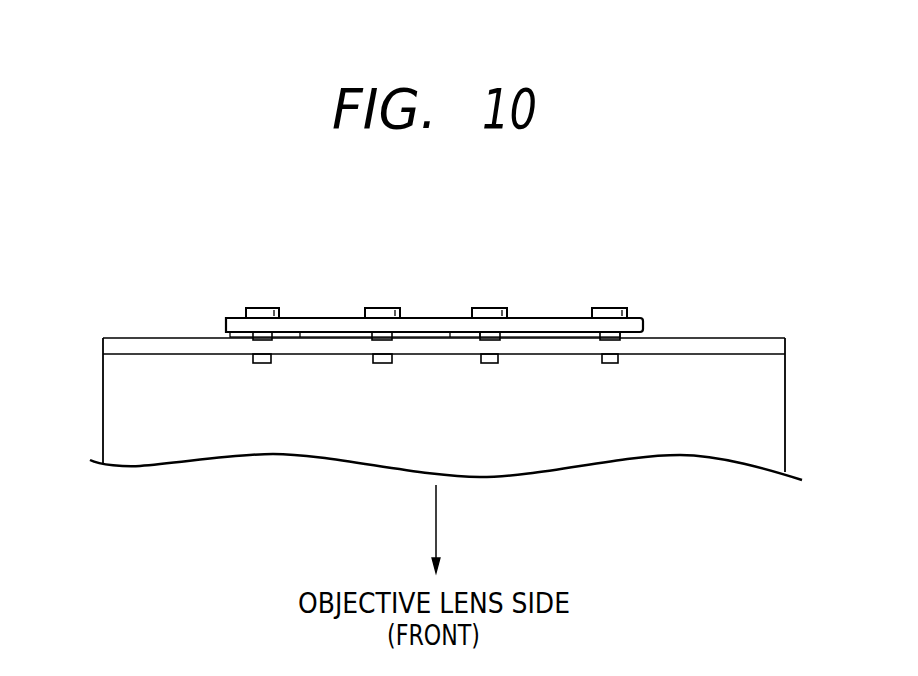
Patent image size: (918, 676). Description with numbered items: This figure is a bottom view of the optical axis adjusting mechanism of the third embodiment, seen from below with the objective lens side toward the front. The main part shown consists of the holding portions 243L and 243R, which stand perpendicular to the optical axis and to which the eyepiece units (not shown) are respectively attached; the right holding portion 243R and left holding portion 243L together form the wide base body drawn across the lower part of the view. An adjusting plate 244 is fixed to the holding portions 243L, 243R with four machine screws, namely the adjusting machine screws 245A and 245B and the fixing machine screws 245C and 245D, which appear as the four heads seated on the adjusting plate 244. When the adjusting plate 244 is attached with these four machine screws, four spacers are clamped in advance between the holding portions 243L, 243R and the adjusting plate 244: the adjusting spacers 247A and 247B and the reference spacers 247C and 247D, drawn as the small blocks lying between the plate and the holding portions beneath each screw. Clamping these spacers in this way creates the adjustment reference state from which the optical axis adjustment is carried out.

The holding portion 243L is at (135, 342).
The holding portion 243R is at (750, 345).
The adjusting plate 244 is at (237, 318).
The adjusting machine screw 245A is at (612, 309).
The adjusting machine screw 245B is at (490, 309).
The fixing machine screw 245C is at (386, 307).
The fixing machine screw 245D is at (267, 310).
The adjusting spacer 247A is at (600, 340).
The adjusting spacer 247B is at (482, 340).
The reference spacer 247C is at (372, 340).
The reference spacer 247D is at (250, 340).